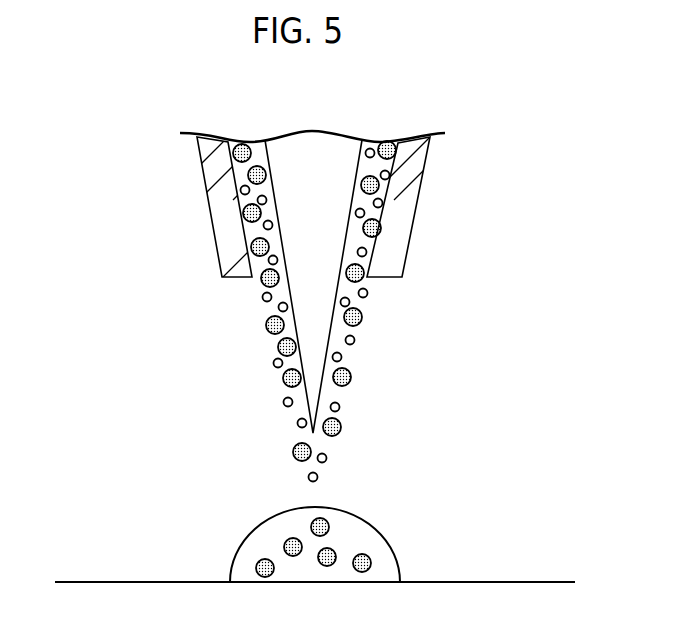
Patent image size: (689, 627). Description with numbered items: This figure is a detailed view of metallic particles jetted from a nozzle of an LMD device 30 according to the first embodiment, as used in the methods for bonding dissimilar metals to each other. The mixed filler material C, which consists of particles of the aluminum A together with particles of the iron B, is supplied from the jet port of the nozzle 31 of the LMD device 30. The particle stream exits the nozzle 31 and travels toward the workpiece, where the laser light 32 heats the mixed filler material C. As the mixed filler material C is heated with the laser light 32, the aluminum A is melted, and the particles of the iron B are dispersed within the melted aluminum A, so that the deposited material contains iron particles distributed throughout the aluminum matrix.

The LMD device 30 is at (371, 266).
The nozzle 31 is at (407, 207).
The laser light 32 is at (292, 203).
The aluminum A is at (262, 299).
The iron B is at (268, 331).
The mixed filler material C is at (138, 310).